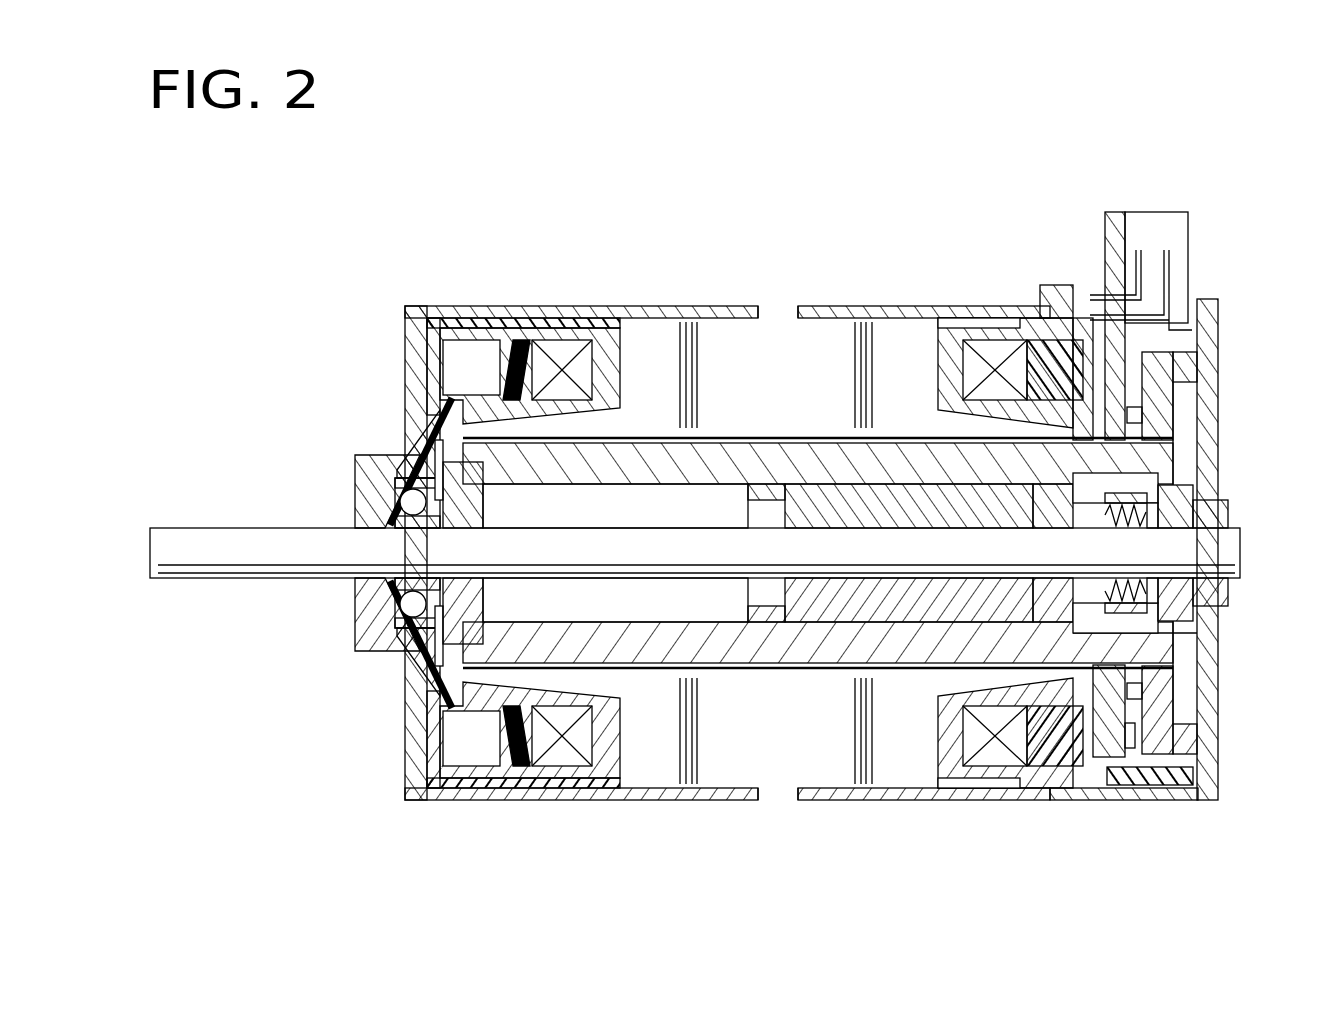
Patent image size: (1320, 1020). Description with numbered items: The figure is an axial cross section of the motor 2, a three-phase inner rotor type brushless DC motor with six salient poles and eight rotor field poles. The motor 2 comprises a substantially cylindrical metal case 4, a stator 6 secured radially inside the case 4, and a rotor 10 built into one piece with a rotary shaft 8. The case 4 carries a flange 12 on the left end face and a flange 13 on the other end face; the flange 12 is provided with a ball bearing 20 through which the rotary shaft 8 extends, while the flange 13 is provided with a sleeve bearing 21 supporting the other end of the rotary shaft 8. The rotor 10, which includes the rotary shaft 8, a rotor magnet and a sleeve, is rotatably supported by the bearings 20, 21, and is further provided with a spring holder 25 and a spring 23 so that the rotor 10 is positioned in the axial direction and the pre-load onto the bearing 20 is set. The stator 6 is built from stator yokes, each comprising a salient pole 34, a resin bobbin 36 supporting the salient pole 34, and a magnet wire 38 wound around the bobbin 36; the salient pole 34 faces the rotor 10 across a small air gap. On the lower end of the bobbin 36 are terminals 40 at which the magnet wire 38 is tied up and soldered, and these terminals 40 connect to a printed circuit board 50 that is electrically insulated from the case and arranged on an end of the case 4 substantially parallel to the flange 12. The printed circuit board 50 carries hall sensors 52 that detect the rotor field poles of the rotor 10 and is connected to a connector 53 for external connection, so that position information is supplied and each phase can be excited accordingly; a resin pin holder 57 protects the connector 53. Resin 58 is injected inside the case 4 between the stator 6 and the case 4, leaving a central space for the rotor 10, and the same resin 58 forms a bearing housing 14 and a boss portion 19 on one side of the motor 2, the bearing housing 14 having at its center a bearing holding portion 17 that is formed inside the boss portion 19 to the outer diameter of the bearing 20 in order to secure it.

The motor 2 is at (730, 275).
The case 4 is at (660, 306).
The stator 6 is at (786, 303).
The rotary shaft 8 is at (214, 535).
The rotor 10 is at (878, 655).
The flange 12 is at (413, 333).
The flange 13 is at (1218, 343).
The bearing housing 14 is at (372, 443).
The bearing holding portion 17 is at (370, 594).
The boss portion 19 is at (352, 498).
The ball bearing 20 is at (395, 630).
The sleeve bearing 21 is at (1226, 513).
The spring 23 is at (1157, 595).
The spring holder 25 is at (1148, 618).
The salient pole 34 is at (840, 330).
The bobbin 36 is at (966, 322).
The magnet wire 38 is at (996, 342).
The terminals 40 is at (1100, 765).
The printed circuit board 50 is at (1113, 220).
The hall sensors 52 is at (1142, 417).
The connector 53 is at (1190, 262).
The pin holder 57 is at (1190, 230).
The resin 58 is at (440, 408).